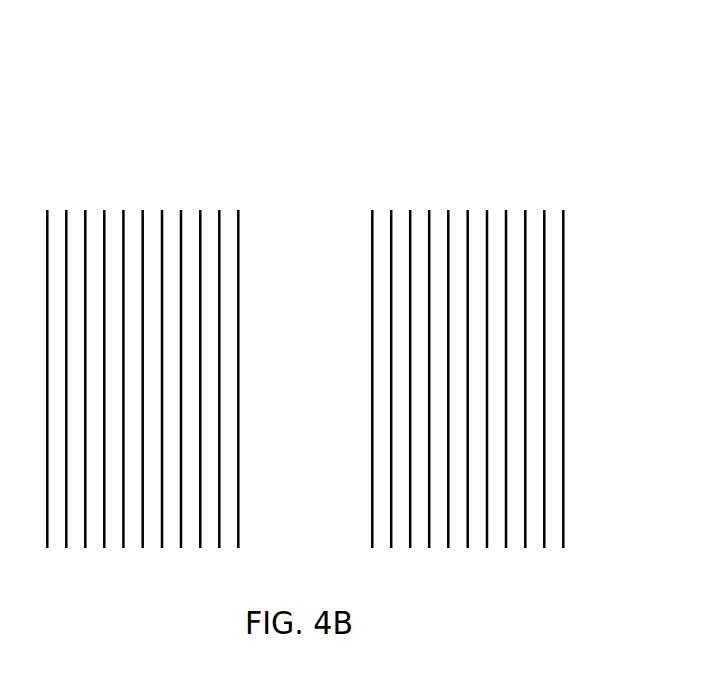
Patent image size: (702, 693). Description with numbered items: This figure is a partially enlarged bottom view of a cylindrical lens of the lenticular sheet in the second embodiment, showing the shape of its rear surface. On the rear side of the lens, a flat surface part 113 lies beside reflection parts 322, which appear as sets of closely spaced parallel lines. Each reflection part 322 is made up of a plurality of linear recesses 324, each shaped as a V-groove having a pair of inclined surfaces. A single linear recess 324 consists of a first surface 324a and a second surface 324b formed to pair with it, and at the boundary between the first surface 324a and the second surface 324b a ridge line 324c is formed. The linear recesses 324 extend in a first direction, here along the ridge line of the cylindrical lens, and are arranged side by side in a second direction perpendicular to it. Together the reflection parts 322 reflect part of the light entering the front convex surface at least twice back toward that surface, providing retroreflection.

The flat surface part 113 is at (280, 228).
The reflection part 322 is at (449, 282).
The linear recess 324 is at (449, 305).
The first surface 324a is at (380, 218).
The second surface 324b is at (400, 218).
The ridge line 324c is at (393, 213).